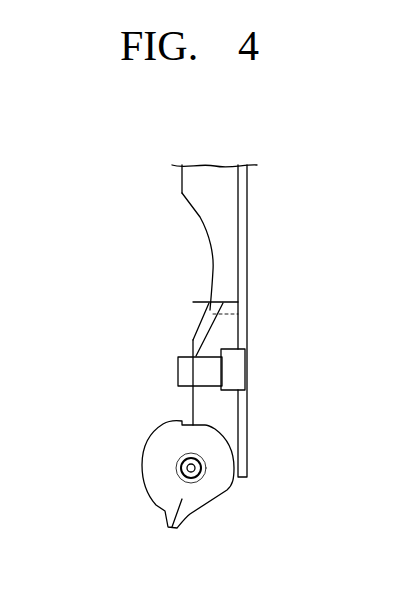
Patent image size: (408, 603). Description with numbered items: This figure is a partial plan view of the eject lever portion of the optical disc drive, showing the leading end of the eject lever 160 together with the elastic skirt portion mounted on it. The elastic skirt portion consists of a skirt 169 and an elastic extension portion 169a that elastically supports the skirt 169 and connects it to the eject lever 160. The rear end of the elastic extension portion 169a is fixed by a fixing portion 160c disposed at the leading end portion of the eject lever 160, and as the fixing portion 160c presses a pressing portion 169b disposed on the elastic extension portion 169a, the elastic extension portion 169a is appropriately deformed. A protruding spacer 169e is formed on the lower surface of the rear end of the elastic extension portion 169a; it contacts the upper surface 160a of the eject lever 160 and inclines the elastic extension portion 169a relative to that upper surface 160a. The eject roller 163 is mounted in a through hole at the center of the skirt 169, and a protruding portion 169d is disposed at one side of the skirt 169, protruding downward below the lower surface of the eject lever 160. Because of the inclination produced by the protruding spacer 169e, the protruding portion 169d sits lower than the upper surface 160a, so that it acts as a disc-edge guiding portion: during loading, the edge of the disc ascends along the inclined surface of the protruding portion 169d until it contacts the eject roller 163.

The eject lever 160 is at (224, 321).
The upper surface of the eject lever 160a is at (213, 230).
The fixing portion 160c is at (233, 368).
The skirt 169 is at (154, 433).
The elastic extension portion 169a is at (201, 402).
The pressing portion 169b is at (202, 370).
The protruding portion 169d is at (173, 530).
The protruding spacer 169e is at (195, 302).
The eject roller 163 is at (192, 472).